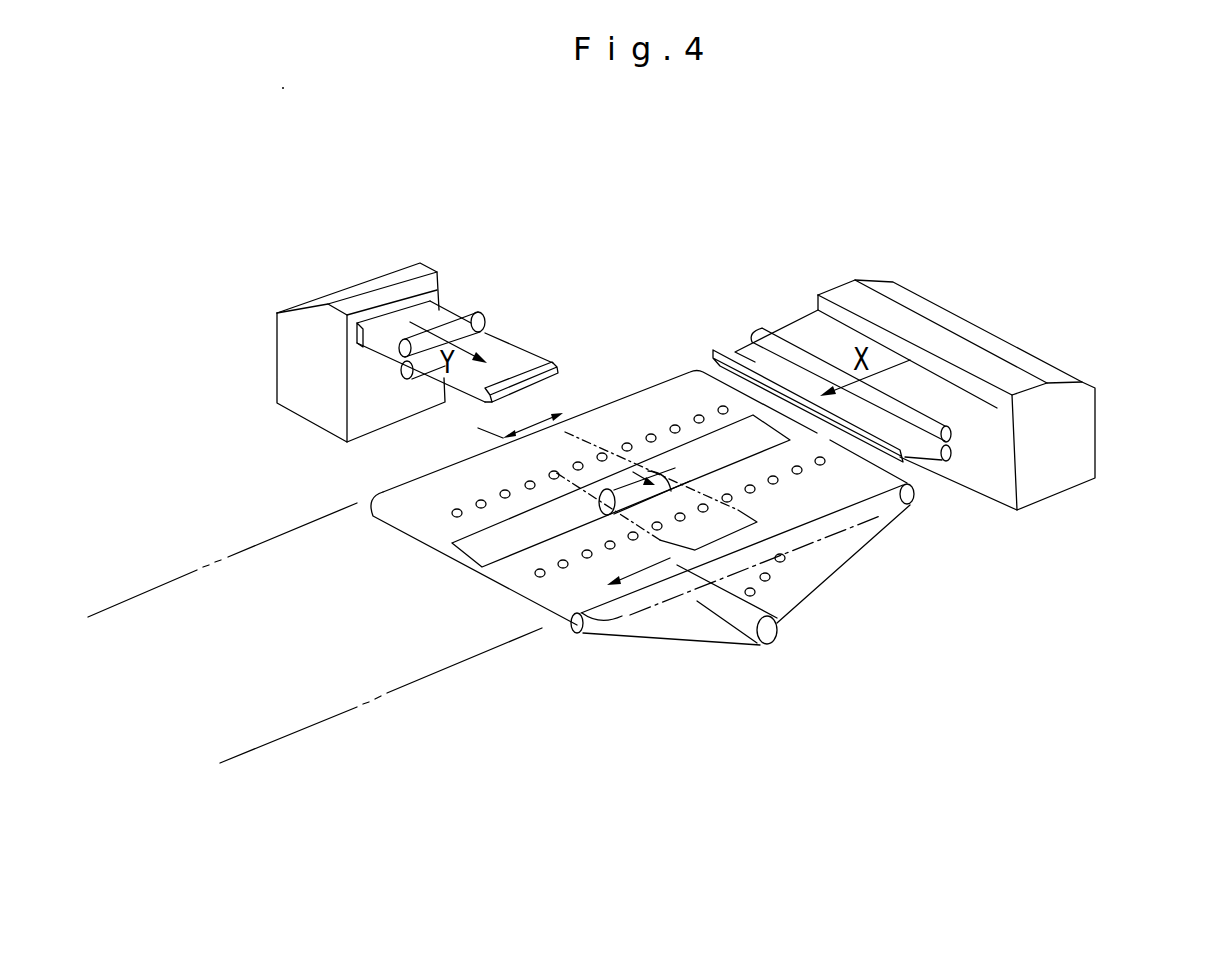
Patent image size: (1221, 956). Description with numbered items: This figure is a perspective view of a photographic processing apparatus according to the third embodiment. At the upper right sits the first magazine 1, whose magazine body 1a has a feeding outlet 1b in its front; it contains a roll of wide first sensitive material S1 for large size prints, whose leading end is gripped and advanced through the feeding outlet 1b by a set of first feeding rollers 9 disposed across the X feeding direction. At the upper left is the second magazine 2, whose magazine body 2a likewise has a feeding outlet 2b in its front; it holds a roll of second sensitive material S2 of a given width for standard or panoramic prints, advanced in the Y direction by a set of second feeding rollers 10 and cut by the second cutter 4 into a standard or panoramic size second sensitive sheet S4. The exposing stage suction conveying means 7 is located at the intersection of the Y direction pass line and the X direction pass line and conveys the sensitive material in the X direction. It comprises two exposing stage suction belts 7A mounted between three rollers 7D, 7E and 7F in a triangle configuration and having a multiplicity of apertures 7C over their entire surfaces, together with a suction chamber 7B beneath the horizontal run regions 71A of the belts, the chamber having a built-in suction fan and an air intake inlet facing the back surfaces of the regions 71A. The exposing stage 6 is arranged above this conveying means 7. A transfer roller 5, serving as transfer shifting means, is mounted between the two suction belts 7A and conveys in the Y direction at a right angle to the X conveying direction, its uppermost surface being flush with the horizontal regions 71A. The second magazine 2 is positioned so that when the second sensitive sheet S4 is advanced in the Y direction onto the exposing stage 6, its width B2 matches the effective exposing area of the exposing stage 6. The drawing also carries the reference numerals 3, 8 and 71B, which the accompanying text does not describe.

The first magazine 1 is at (1170, 350).
The magazine body 1a is at (1058, 378).
The feeding outlet 1b is at (1013, 435).
The second magazine 2 is at (478, 203).
The magazine body 2a is at (380, 273).
The feeding outlet 2b is at (441, 288).
The guide plate 3 is at (908, 462).
The second cutter 4 is at (543, 370).
The transfer roller 5 is at (597, 510).
The exposing stage 6 is at (455, 482).
The exposing stage suction conveying means 7 is at (706, 655).
The exposing stage suction belts 7A is at (420, 533).
The suction chamber 7B is at (737, 645).
The apertures 7C is at (648, 437).
The roller 7D is at (777, 643).
The roller 7E is at (907, 502).
The roller 7F is at (585, 632).
The sheet path guide lines 8 is at (407, 653).
The first feeding rollers 9 is at (950, 459).
The second feeding rollers 10 is at (473, 315).
The horizontal run regions 71A is at (682, 390).
The belt lower surface portion 71B is at (672, 632).
The first sensitive material S1 is at (820, 335).
The second sensitive material S2 is at (475, 383).
The second sensitive sheet S4 is at (565, 432).
The width of second sensitive sheet B2 is at (520, 416).